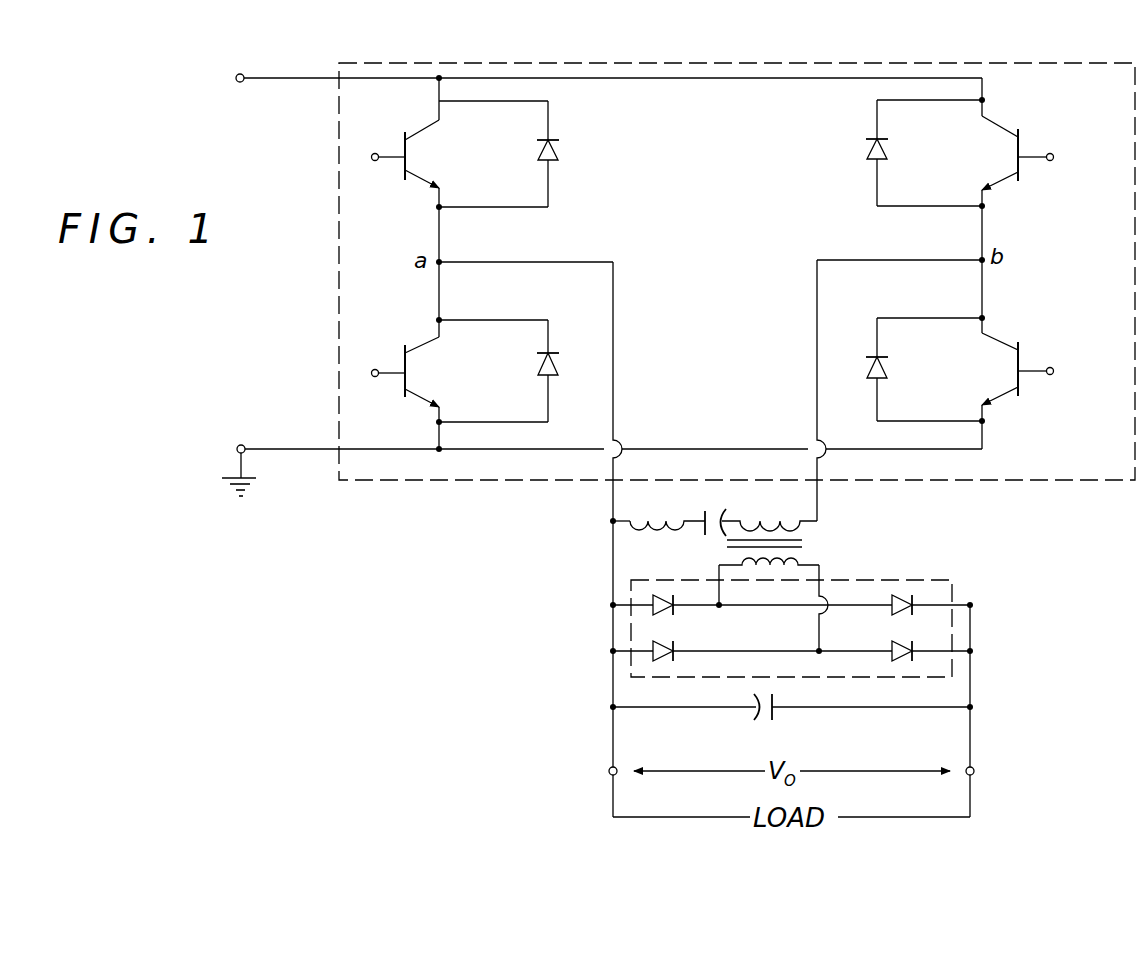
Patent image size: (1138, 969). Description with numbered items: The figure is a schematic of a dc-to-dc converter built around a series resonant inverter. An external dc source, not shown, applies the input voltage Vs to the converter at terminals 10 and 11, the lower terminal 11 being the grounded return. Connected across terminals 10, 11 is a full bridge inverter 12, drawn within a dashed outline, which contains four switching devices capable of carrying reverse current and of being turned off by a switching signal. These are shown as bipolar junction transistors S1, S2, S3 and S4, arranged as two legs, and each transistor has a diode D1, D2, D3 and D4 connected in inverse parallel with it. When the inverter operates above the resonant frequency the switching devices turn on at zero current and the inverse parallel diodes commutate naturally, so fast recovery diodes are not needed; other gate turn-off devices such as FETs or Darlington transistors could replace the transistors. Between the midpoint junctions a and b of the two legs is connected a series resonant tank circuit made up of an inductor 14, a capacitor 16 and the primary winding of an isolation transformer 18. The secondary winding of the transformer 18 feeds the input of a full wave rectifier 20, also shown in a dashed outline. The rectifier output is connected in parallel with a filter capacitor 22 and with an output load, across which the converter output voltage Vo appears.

The terminal 10 is at (243, 82).
The terminal 11 is at (245, 445).
The full bridge inverter 12 is at (1062, 480).
The inductor 14 is at (640, 532).
The capacitor 16 is at (706, 496).
The isolation transformer 18 is at (806, 545).
The full wave rectifier 20 is at (940, 578).
The filter capacitor 22 is at (775, 712).
The switching device S1 is at (424, 128).
The switching device S2 is at (424, 344).
The switching device S3 is at (1000, 128).
The switching device S4 is at (998, 345).
The diode D1 is at (560, 150).
The diode D2 is at (557, 356).
The diode D3 is at (868, 150).
The diode D4 is at (872, 366).